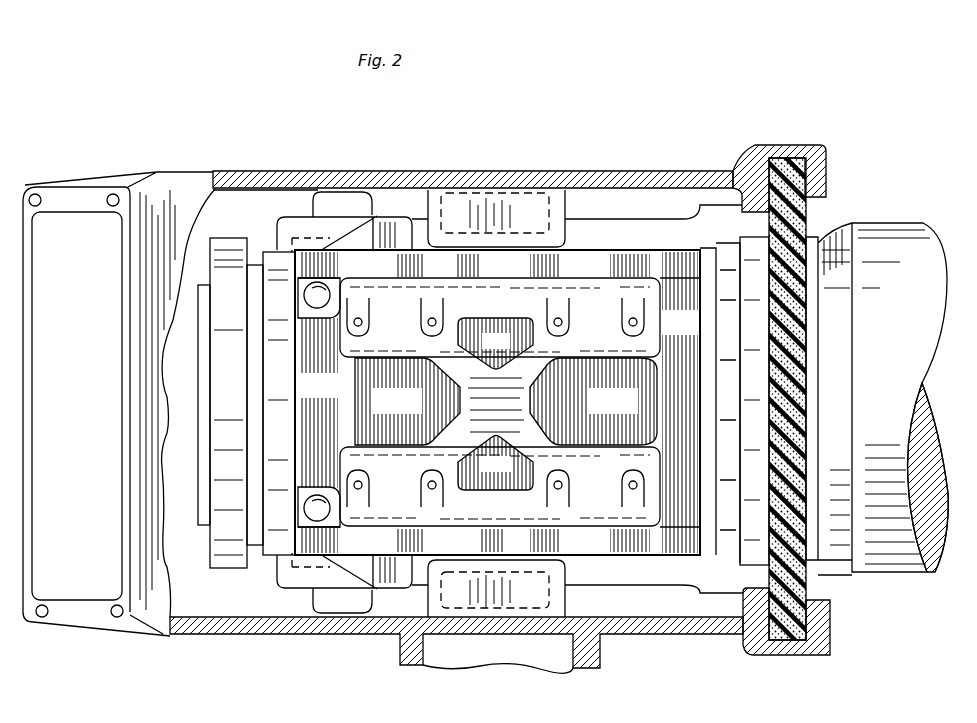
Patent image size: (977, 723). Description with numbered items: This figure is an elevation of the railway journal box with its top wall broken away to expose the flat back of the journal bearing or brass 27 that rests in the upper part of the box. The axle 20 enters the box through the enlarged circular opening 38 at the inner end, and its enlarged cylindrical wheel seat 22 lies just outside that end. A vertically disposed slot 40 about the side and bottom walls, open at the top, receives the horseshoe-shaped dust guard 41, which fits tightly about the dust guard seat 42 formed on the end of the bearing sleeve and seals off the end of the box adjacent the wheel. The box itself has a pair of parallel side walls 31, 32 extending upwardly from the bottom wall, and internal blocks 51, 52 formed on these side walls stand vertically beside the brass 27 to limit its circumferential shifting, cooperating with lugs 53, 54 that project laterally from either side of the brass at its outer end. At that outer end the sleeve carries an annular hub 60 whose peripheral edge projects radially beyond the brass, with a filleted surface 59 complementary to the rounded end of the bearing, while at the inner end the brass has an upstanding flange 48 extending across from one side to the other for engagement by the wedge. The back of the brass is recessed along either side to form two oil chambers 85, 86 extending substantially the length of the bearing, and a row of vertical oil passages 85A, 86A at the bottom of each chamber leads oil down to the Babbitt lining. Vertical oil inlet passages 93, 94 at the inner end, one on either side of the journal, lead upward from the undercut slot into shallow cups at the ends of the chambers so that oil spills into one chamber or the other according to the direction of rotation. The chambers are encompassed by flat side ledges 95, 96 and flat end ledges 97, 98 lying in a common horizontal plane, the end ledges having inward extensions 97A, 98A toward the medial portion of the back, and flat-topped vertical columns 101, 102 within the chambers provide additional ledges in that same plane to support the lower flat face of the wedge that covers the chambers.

The axle 20 is at (930, 418).
The wheel seat 22 is at (912, 310).
The journal bearing 27 is at (497, 345).
The side wall 31 is at (253, 180).
The side wall 32 is at (233, 636).
The circular opening 38 is at (830, 205).
The slot 40 is at (790, 645).
The dust guard 41 is at (795, 377).
The dust guard seat 42 is at (818, 443).
The upstanding flange 48 is at (718, 363).
The internal block 51 is at (562, 205).
The internal block 52 is at (595, 600).
The lug 53 is at (293, 220).
The lug 54 is at (300, 597).
The filleted surface 59 is at (260, 556).
The hub 60 is at (222, 556).
The oil chamber 85 is at (588, 300).
The vertical oil passages 85A is at (428, 328).
The oil chamber 86 is at (388, 478).
The vertical oil passages 86A is at (632, 482).
The oil inlet passage 93 is at (322, 290).
The oil inlet passage 94 is at (305, 510).
The side ledge 95 is at (507, 273).
The side ledge 96 is at (469, 548).
The end ledge 97 is at (322, 393).
The ledge extension 97A is at (414, 409).
The end ledge 98 is at (686, 330).
The ledge extension 98A is at (593, 401).
The vertical column 101 is at (507, 351).
The vertical column 102 is at (509, 475).